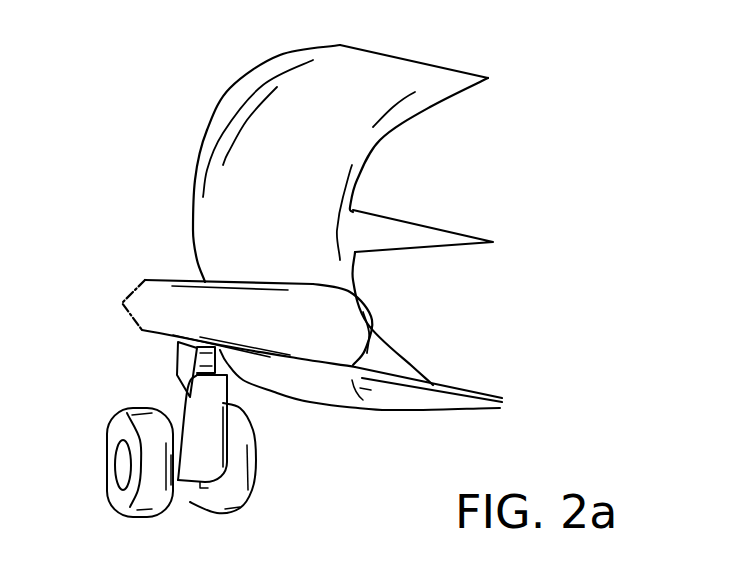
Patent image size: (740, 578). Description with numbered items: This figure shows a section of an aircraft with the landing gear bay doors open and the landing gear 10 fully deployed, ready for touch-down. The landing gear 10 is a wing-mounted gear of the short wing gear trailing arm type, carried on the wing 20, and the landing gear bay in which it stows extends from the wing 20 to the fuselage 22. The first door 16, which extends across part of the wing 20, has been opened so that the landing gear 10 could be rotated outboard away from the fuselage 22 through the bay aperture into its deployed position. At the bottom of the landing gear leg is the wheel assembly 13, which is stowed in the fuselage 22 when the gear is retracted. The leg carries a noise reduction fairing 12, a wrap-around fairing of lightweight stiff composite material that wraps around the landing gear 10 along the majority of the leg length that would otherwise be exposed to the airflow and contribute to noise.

The landing gear 10 is at (104, 391).
The noise reduction fairing 12 is at (213, 432).
The landing gear wheel assembly 13 is at (115, 427).
The first door 16 is at (177, 367).
The wing 20 is at (258, 297).
The fuselage 22 is at (478, 317).